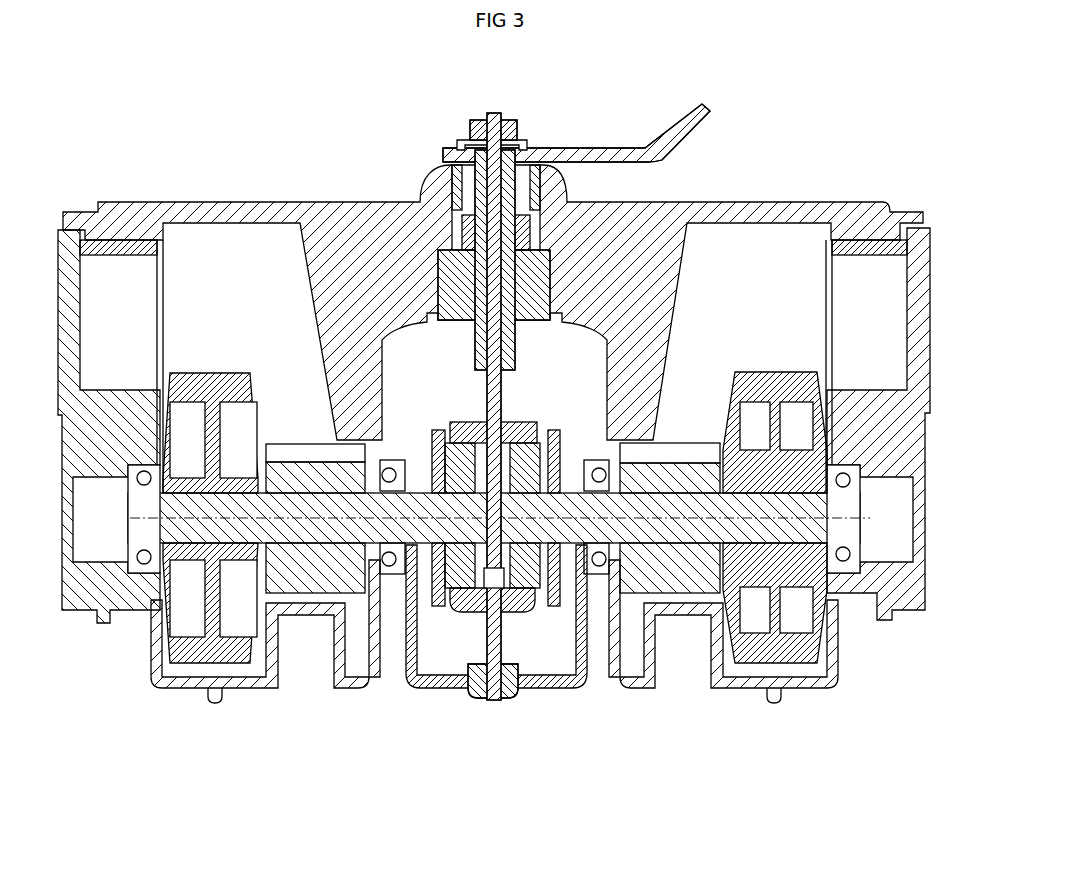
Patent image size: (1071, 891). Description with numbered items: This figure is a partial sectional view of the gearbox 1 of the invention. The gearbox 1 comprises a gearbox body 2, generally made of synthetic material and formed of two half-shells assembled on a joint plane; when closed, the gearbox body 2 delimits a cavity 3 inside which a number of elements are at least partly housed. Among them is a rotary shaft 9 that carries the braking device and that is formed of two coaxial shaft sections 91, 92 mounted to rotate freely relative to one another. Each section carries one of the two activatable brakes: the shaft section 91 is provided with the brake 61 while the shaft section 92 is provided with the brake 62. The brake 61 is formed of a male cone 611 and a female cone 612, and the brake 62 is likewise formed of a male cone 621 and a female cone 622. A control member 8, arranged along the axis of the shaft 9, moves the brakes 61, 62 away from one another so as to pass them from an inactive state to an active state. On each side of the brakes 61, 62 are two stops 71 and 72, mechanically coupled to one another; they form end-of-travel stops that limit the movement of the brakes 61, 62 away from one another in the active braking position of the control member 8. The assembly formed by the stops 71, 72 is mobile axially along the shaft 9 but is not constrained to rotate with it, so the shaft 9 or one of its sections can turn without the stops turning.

The gearbox 1 is at (765, 174).
The gearbox body 2 is at (833, 640).
The cavity 3 is at (800, 300).
The control member 8 is at (497, 620).
The rotary shaft 9 is at (195, 522).
The shaft section 91 is at (320, 527).
The shaft section 92 is at (797, 548).
The brake 61 is at (424, 698).
The male cone 611 is at (445, 605).
The female cone 612 is at (477, 588).
The brake 62 is at (561, 695).
The male cone 621 is at (540, 607).
The female cone 622 is at (510, 588).
The stop 71 is at (440, 548).
The stop 72 is at (551, 585).